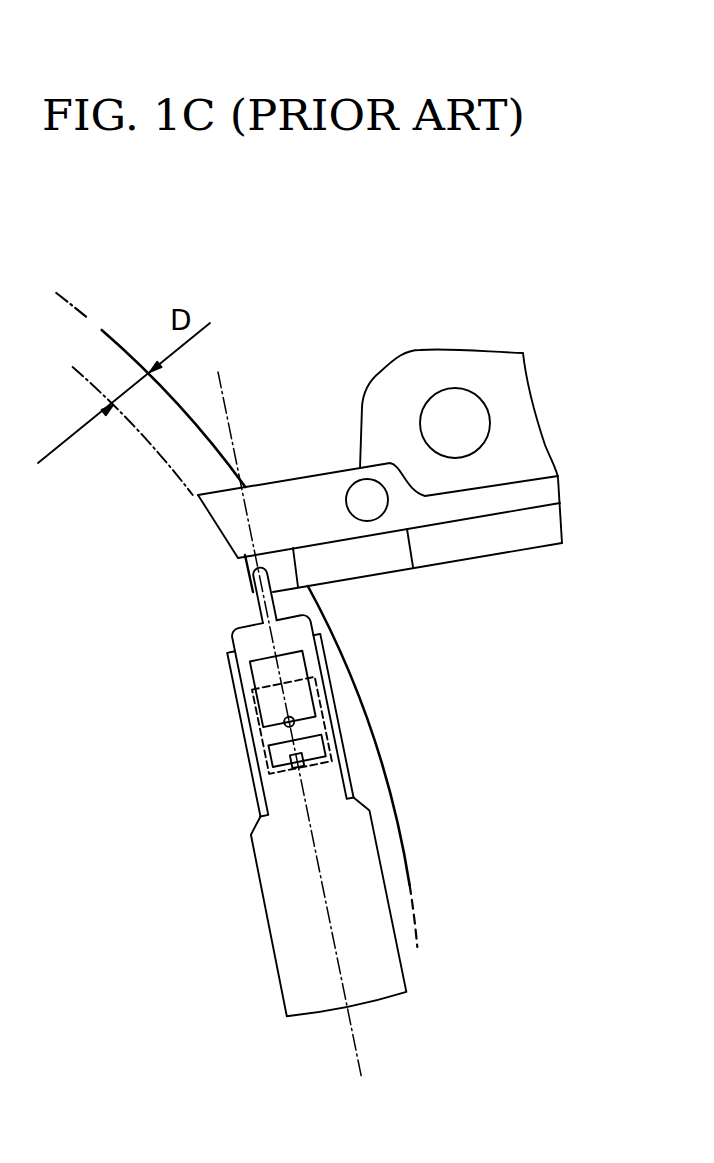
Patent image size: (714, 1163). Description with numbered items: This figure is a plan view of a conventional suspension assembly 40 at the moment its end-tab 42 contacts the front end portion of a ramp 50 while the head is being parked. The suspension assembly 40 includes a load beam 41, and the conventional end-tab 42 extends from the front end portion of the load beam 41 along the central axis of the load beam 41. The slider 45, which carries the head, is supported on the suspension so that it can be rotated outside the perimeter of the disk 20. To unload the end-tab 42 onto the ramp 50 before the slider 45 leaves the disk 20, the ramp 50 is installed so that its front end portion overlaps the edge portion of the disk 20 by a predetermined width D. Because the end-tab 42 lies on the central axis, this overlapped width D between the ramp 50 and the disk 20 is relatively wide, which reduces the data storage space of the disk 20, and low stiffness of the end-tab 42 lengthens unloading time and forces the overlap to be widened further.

The disk 20 is at (365, 760).
The suspension assembly 40 is at (227, 855).
The load beam 41 is at (270, 733).
The end-tab 42 is at (253, 594).
The slider 45 is at (332, 706).
The ramp 50 is at (297, 497).